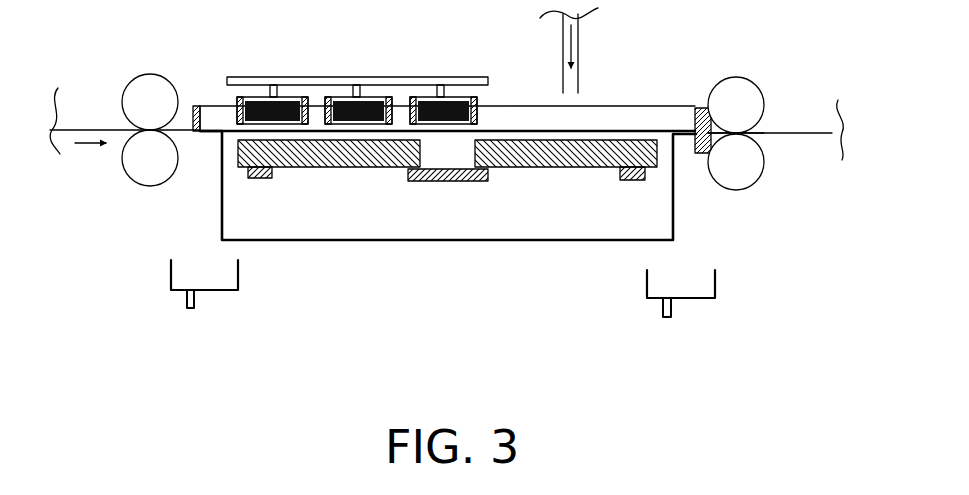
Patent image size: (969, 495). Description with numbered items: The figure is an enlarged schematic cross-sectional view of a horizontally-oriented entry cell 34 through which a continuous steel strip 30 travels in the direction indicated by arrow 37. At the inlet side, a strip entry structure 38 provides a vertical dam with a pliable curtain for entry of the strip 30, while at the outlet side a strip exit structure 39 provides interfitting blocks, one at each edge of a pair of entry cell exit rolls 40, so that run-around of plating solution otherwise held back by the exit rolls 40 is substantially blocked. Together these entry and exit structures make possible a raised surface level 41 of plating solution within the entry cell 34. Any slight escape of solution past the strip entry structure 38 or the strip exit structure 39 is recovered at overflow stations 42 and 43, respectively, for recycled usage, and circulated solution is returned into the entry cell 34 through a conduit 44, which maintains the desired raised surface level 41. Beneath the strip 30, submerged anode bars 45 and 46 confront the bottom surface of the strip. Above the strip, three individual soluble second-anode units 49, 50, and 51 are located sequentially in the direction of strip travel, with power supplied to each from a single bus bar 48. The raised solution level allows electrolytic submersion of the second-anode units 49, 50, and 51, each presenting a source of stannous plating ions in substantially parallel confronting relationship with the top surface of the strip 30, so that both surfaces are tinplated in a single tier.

The strip 30 is at (77, 129).
The entry cell 34 is at (452, 290).
The arrow 37 is at (78, 143).
The strip entry structure 38 is at (197, 92).
The strip exit structure 39 is at (702, 108).
The entry cell exit rolls 40 is at (762, 68).
The raised surface level 41 is at (656, 108).
The overflow station 42 is at (213, 292).
The overflow station 43 is at (686, 299).
The conduit 44 is at (563, 48).
The submerged anode bar 45 is at (351, 168).
The submerged anode bar 46 is at (560, 168).
The single bus bar 48 is at (262, 76).
The second-anode unit 49 is at (290, 97).
The second-anode unit 50 is at (377, 96).
The second-anode unit 51 is at (458, 95).